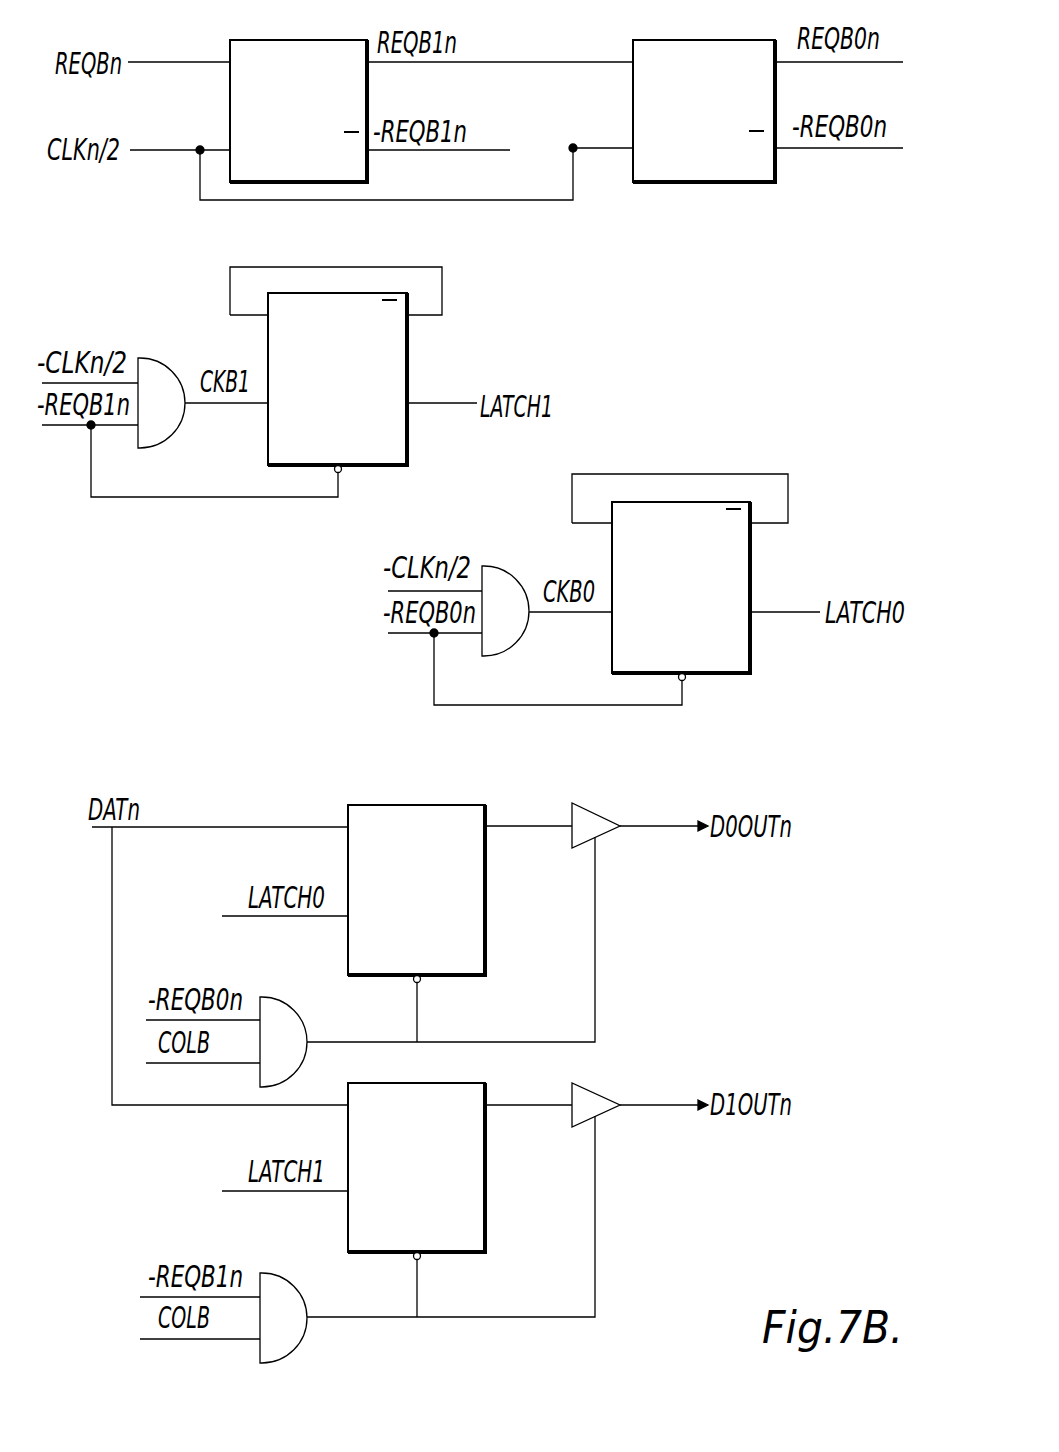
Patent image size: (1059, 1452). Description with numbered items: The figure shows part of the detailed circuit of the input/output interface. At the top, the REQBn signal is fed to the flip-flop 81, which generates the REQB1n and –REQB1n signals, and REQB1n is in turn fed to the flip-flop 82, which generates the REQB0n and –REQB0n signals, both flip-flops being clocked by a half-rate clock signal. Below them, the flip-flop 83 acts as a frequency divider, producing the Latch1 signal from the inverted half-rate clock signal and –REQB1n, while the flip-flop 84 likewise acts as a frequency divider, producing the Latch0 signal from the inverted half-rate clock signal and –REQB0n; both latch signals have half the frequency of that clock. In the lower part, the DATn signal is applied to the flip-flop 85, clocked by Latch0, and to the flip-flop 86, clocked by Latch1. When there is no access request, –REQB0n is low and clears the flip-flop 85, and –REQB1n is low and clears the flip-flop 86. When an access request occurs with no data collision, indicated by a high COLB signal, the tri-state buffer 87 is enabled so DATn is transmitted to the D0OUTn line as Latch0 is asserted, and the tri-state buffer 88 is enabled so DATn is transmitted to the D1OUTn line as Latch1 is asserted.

The flip-flop 81 is at (267, 40).
The flip-flop 82 is at (672, 40).
The flip-flop 83 is at (387, 465).
The flip-flop 84 is at (732, 673).
The flip-flop 85 is at (467, 975).
The flip-flop 86 is at (467, 1252).
The tri-state buffer 87 is at (600, 815).
The tri-state buffer 88 is at (600, 1094).